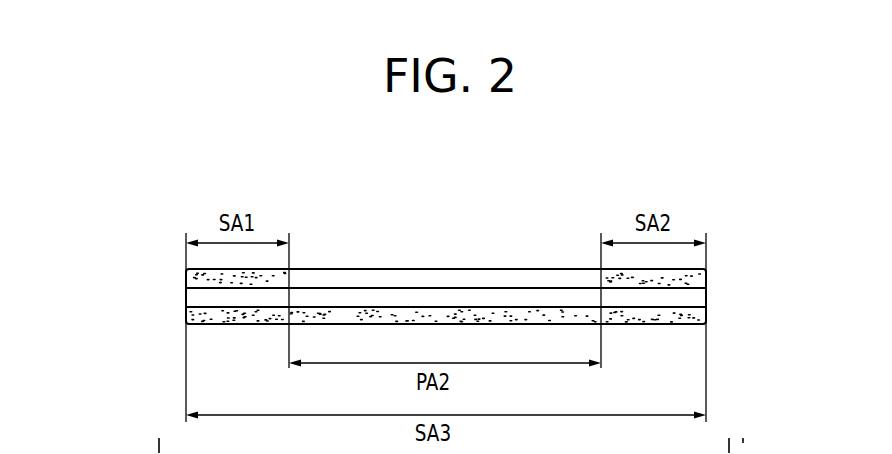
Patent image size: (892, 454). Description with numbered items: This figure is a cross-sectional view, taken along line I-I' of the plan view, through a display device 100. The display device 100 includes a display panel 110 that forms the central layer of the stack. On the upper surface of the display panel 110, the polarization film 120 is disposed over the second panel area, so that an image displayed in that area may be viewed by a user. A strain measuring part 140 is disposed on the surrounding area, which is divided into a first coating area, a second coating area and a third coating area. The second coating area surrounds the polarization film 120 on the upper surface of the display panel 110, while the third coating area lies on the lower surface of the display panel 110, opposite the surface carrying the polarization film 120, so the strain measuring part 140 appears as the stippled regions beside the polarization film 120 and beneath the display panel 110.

The display device 100 is at (208, 177).
The display panel 110 is at (706, 299).
The polarization film 120 is at (445, 278).
The strain measuring part 140 is at (186, 276).